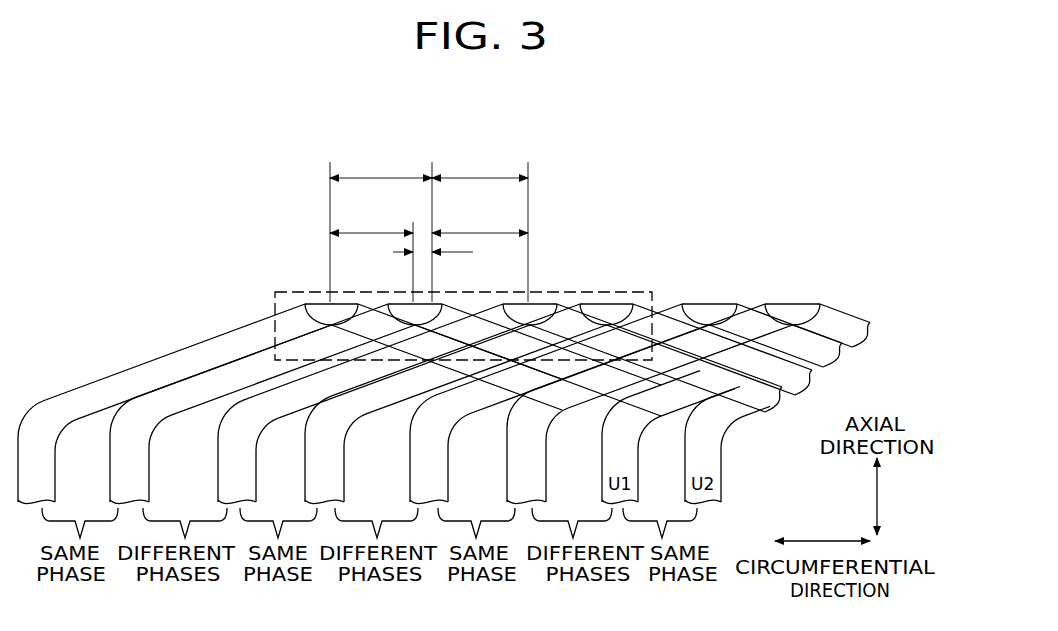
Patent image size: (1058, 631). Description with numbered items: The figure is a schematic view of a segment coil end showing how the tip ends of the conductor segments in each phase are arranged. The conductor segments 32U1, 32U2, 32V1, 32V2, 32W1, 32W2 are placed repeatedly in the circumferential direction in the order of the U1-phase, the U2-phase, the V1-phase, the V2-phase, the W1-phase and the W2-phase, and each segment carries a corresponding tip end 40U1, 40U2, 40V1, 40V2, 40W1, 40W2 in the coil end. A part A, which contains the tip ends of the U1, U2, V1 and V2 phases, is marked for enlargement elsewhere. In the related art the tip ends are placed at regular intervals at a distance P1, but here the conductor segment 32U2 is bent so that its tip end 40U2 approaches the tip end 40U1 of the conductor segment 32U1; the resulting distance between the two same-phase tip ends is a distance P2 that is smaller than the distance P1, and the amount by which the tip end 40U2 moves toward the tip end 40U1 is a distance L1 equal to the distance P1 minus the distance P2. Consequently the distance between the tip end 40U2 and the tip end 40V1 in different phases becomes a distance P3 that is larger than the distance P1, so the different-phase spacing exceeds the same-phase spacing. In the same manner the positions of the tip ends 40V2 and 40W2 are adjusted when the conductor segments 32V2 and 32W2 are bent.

The tip end of U1-phase conductor segment 40U1 is at (313, 302).
The tip end of U2-phase conductor segment 40U2 is at (403, 302).
The tip end of V1-phase conductor segment 40V1 is at (537, 308).
The tip end of V2-phase conductor segment 40V2 is at (620, 308).
The tip end of W1-phase conductor segment 40W1 is at (715, 306).
The tip end of W2-phase conductor segment 40W2 is at (795, 306).
The U1-phase conductor segment 32U1 is at (155, 368).
The U2-phase conductor segment 32U2 is at (188, 403).
The V1-phase conductor segment 32V1 is at (287, 408).
The V2-phase conductor segment 32V2 is at (374, 403).
The W1-phase conductor segment 32W1 is at (467, 413).
The W2-phase conductor segment 32W2 is at (557, 420).
The part A is at (604, 290).
The distance P1 is at (473, 177).
The distance P2 is at (363, 232).
The distance P3 is at (470, 232).
The distance L1 is at (455, 253).